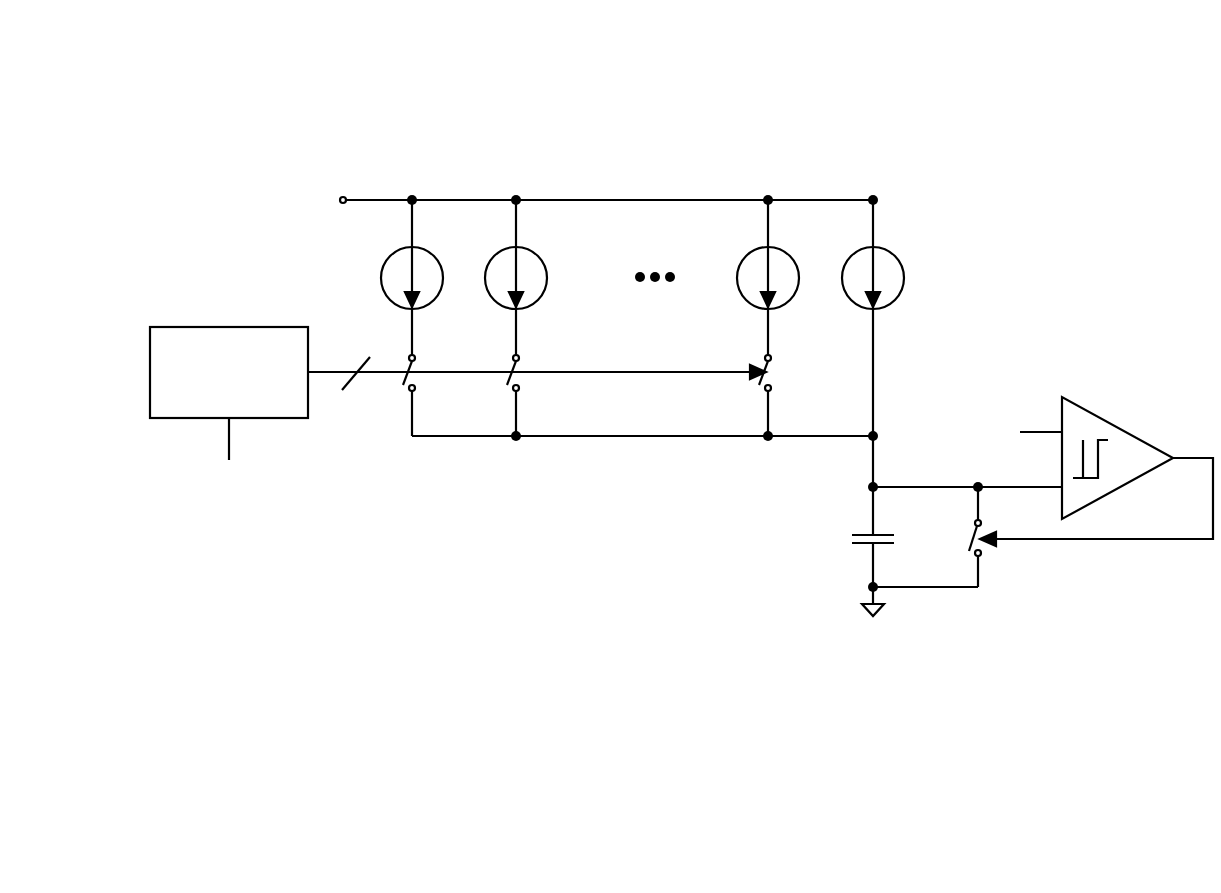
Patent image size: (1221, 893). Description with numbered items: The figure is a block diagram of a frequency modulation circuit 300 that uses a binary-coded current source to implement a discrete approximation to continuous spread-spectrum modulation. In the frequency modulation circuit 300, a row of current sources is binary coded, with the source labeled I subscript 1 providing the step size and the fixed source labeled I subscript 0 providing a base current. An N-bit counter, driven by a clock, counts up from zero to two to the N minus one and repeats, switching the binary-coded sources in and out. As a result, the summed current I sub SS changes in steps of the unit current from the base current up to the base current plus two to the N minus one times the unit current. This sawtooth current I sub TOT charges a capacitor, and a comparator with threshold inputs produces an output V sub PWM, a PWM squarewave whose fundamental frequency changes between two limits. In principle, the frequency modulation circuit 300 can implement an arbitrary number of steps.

The frequency modulation circuit 300 is at (305, 86).
The current source I1 1 is at (779, 302).
The current source I0 0 is at (883, 318).